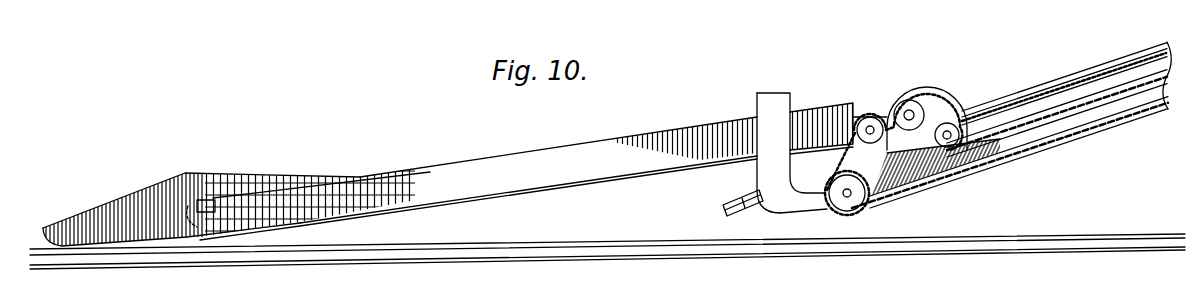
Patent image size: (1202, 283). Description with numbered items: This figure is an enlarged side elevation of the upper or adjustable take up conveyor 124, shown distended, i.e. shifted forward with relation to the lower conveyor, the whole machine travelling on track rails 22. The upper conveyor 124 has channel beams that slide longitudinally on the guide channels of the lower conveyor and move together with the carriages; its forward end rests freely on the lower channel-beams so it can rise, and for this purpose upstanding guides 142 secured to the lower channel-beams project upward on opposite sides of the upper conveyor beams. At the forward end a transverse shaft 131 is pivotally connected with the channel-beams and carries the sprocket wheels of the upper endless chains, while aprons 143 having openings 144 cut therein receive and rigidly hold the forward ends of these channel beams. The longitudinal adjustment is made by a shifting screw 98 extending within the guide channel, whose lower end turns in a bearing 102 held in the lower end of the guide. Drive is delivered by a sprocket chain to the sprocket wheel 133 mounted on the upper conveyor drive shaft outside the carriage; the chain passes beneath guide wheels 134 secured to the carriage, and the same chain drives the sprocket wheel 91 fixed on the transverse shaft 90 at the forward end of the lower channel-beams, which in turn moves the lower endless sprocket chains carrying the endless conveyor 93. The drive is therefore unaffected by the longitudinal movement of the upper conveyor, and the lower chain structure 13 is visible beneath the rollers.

The track rails 22 is at (582, 247).
The conveyor chain 13 is at (846, 176).
The transverse shaft 90 is at (847, 203).
The sprocket wheel 91 is at (823, 208).
The endless conveyor 93 is at (1092, 133).
The shifting screw 98 is at (1057, 92).
The bearing 102 is at (736, 202).
The upper take up conveyor 124 is at (532, 146).
The transverse shaft 131 is at (201, 229).
The sprocket wheel 133 is at (913, 104).
The guide wheels 134 is at (870, 117).
The upstanding guides 142 is at (776, 103).
The aprons 143 is at (243, 171).
The openings 144 is at (262, 192).